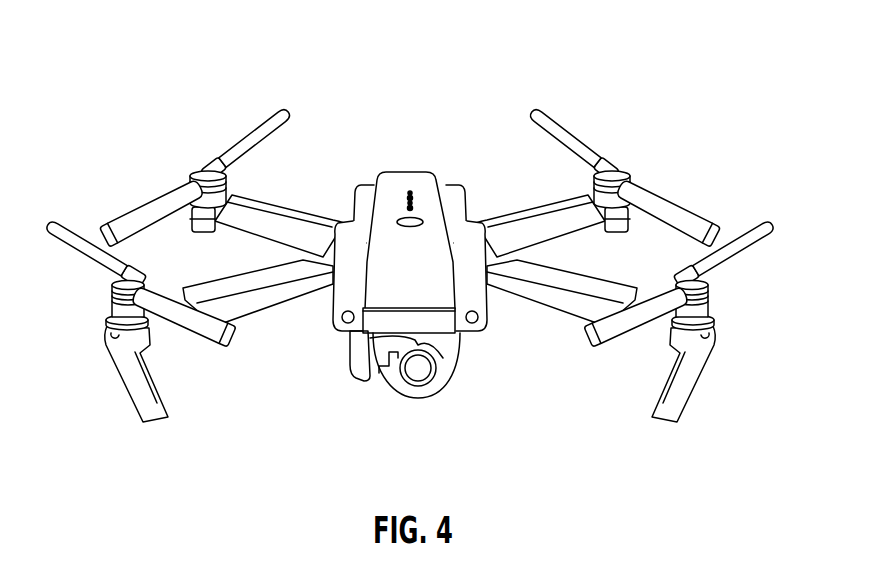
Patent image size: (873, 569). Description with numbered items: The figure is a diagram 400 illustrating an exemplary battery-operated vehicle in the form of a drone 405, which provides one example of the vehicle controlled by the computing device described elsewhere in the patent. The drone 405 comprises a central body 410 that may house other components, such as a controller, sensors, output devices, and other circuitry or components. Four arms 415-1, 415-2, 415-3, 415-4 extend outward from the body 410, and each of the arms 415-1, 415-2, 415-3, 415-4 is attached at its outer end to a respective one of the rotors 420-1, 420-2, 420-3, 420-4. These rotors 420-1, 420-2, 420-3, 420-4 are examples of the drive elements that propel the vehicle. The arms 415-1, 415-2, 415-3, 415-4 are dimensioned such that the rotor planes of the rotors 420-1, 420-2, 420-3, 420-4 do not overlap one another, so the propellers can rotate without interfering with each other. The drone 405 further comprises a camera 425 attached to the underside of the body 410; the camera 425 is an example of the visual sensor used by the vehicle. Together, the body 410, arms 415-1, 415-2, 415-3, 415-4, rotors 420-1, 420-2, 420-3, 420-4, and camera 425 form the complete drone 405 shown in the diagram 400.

The diagram 400 is at (115, 44).
The drone 405 is at (420, 124).
The body 410 is at (452, 190).
The arm 415-1 is at (537, 310).
The arm 415-2 is at (278, 310).
The arm 415-3 is at (288, 208).
The arm 415-4 is at (540, 207).
The rotor 420-1 is at (672, 335).
The rotor 420-2 is at (197, 340).
The rotor 420-3 is at (122, 217).
The rotor 420-4 is at (673, 196).
The camera 425 is at (453, 358).